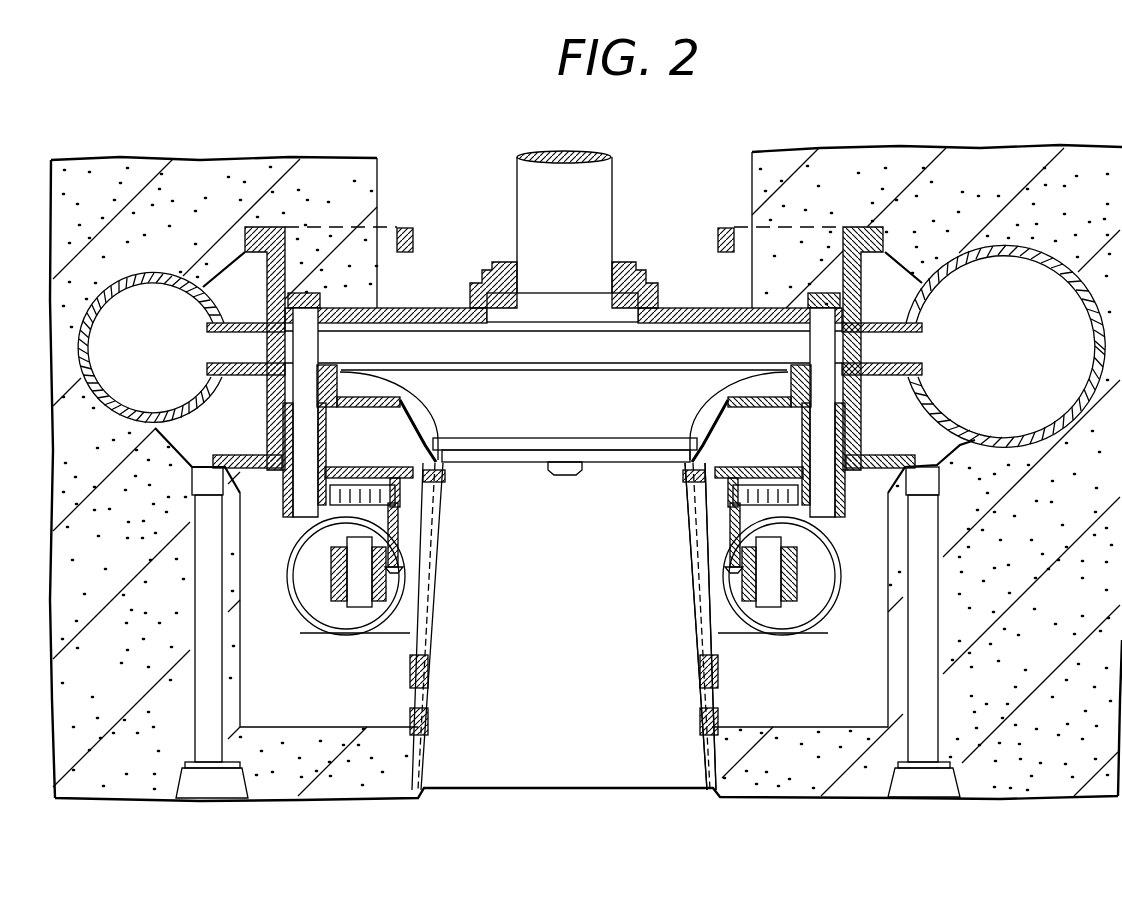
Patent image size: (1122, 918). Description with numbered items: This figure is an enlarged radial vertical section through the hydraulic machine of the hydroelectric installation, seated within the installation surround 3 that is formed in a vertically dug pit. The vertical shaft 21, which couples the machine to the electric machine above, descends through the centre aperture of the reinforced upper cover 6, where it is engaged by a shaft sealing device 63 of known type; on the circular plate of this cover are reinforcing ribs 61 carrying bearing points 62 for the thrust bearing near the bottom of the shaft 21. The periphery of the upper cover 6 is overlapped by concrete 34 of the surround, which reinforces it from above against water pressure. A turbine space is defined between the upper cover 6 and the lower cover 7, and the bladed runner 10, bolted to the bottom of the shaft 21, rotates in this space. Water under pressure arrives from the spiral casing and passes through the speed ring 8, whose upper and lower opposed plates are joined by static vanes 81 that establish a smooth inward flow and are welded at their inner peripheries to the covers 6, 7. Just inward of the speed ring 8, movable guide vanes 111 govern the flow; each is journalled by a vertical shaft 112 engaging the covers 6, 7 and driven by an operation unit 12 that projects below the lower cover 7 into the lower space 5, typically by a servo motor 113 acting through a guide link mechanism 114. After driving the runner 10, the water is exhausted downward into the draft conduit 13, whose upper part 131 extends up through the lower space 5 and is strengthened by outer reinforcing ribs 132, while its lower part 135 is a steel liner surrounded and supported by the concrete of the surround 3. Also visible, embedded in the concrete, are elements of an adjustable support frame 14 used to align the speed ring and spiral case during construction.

The installation surround 3 is at (992, 152).
The lower space 5 is at (872, 687).
The upper cover 6 is at (697, 305).
The lower cover 7 is at (792, 398).
The speed ring 8 is at (925, 320).
The bladed runner 10 is at (578, 422).
The operation unit 12 is at (777, 641).
The draft conduit 13 is at (575, 667).
The adjustable support frame 14 is at (920, 597).
The shaft 21 is at (596, 168).
The concrete 34 is at (798, 247).
The reinforcing ribs 61 is at (410, 292).
The bearing points 62 is at (725, 228).
The shaft sealing device 63 is at (620, 267).
The static vanes 81 is at (232, 340).
The guide vanes 111 is at (830, 350).
The vertical shaft 112 is at (822, 434).
The servo motor 113 is at (770, 578).
The guide link mechanism 114 is at (737, 528).
The upper part 131 is at (695, 628).
The outer reinforcing ribs 132 is at (420, 638).
The lower part 135 is at (707, 758).